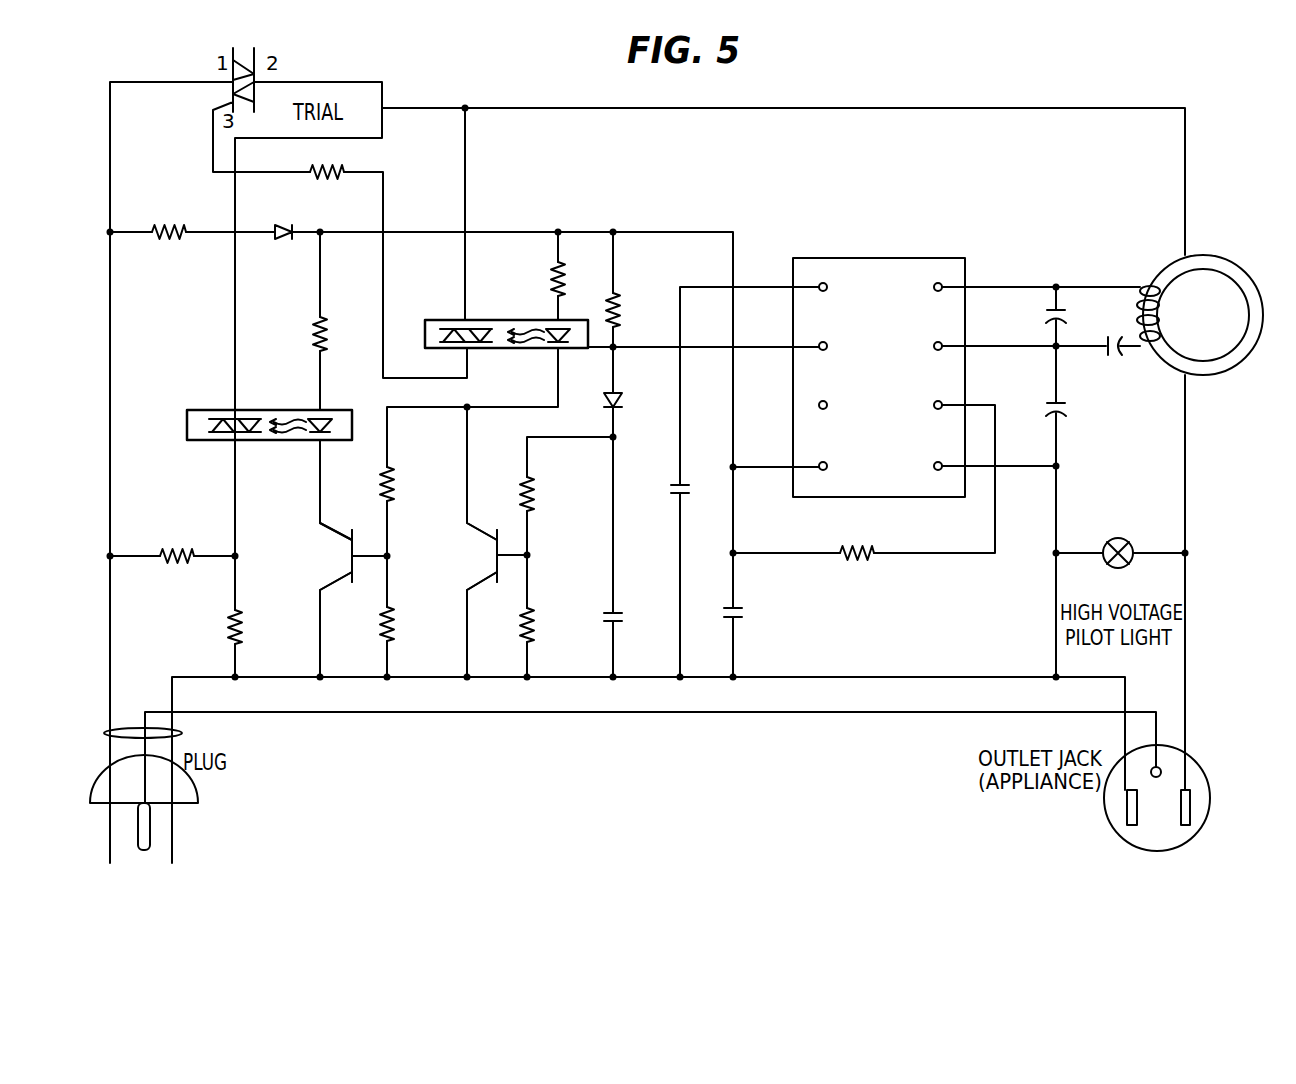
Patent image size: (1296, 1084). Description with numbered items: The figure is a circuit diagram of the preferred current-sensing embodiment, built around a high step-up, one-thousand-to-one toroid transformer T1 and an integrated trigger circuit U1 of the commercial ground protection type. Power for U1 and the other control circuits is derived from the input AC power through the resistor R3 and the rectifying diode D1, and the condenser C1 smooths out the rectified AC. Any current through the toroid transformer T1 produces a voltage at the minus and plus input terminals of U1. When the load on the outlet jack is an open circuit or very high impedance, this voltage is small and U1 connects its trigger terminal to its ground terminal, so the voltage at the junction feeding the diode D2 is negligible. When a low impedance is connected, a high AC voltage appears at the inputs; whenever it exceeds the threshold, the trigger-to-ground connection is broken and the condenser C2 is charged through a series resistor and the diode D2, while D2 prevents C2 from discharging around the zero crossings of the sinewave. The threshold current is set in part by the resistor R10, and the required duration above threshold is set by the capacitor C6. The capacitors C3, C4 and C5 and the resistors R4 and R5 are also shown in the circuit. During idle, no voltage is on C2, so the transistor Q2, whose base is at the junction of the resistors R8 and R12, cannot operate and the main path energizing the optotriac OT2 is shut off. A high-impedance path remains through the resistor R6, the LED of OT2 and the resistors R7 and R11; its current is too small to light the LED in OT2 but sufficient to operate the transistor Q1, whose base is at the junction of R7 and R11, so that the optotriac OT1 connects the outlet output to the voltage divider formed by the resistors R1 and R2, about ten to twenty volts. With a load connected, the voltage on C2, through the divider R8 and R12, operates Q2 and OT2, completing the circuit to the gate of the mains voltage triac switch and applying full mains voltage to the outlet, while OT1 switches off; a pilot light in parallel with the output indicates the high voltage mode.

The resistor R1 is at (177, 558).
The resistor R2 is at (259, 633).
The resistor R3 is at (169, 217).
The resistor 470 / 15K R4 is at (483, 240).
The resistor 3.9K R5 is at (340, 336).
The resistor R6 is at (579, 279).
The resistor R7 is at (406, 492).
The resistor R8 is at (546, 492).
The resistor R10 is at (856, 554).
The resistor R11 is at (410, 633).
The resistor R12 is at (550, 633).
The condenser C1 is at (760, 618).
The condenser C2 is at (639, 630).
The capacitor .0039 MF C3 is at (1052, 292).
The capacitor 700pF C4 is at (1074, 409).
The capacitor 18uF C5 is at (1112, 349).
The capacitor C6 is at (699, 491).
The rectifying diode D1 is at (283, 216).
The diode D2 is at (625, 386).
The transistor Q1 is at (325, 556).
The transistor Q2 is at (471, 556).
The optotriac OT1 is at (267, 417).
The optotriac OT2 is at (503, 331).
The integrated trigger circuit U1 is at (881, 349).
The toroid transformer T1 is at (1200, 318).